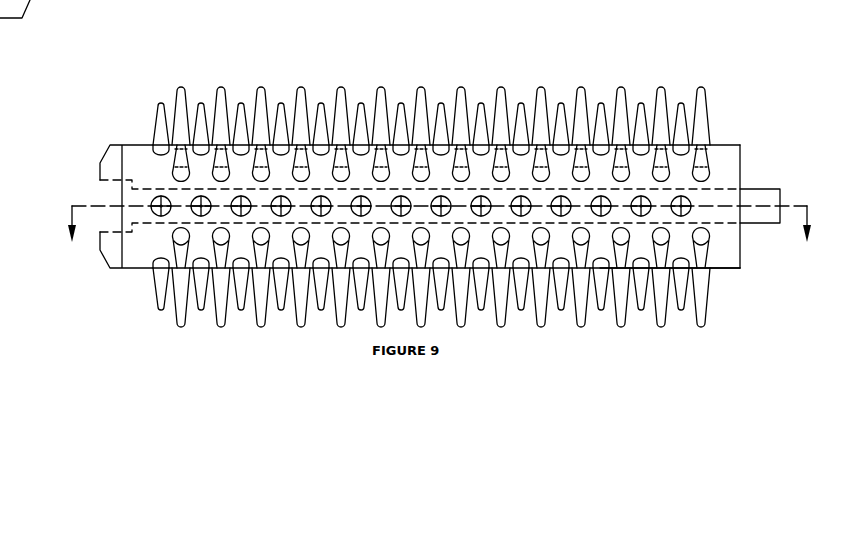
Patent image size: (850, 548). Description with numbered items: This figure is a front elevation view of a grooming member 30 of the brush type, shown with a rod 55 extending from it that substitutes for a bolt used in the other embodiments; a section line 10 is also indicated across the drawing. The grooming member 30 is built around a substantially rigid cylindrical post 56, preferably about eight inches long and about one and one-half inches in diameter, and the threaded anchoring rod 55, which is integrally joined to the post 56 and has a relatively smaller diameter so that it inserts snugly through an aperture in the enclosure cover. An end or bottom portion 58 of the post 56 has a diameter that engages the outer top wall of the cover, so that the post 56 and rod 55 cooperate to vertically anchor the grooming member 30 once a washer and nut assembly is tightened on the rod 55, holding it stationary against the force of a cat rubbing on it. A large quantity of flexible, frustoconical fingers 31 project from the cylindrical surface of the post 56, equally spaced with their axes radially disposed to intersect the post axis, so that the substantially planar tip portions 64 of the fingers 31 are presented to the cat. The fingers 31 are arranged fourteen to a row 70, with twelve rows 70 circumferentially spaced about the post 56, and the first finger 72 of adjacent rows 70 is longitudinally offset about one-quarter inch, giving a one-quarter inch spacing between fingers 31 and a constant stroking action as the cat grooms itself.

The section line 10- 10 is at (441, 234).
The grooming member 30 is at (520, 330).
The fingers 31 is at (645, 302).
The rod 55 is at (765, 224).
The post 56 is at (731, 273).
The bottom portion 58 is at (741, 170).
The tip portion 64 is at (402, 104).
The row 70 is at (303, 89).
The first finger 72 is at (173, 170).